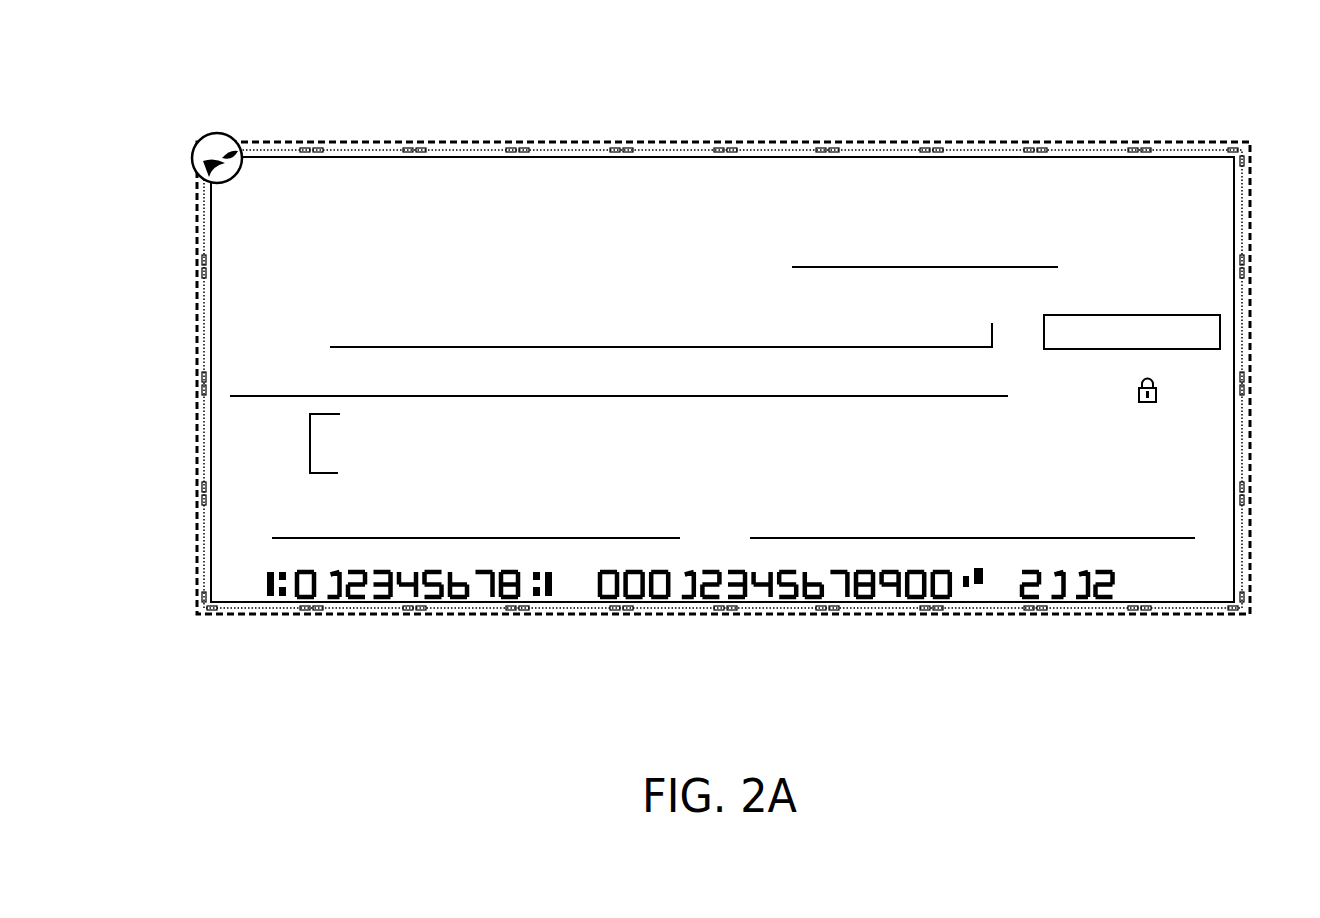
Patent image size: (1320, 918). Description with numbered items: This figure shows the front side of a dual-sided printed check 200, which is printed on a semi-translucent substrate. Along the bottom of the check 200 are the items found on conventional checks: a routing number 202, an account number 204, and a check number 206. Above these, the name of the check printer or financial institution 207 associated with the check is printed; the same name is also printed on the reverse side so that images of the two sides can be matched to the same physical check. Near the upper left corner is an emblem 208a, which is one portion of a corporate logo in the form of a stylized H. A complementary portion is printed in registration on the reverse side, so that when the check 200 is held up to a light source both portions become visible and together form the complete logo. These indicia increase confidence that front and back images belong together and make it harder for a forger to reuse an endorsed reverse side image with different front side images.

The dual-sided printed check 200 is at (1038, 118).
The routing number 202 is at (272, 617).
The account number 204 is at (593, 617).
The check number 206 is at (1213, 184).
The name of the check printer or financial institution 207 is at (308, 445).
The emblem 208a is at (218, 150).